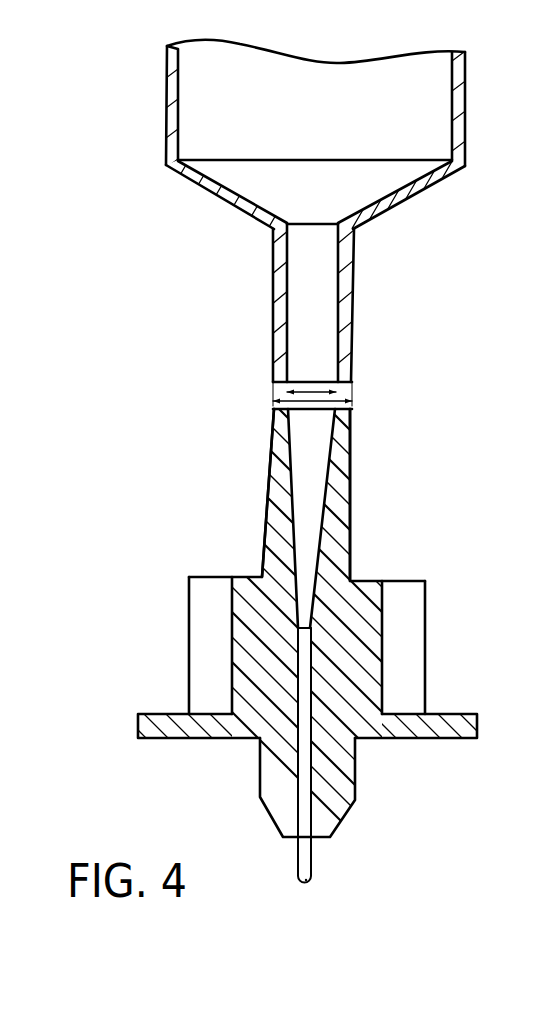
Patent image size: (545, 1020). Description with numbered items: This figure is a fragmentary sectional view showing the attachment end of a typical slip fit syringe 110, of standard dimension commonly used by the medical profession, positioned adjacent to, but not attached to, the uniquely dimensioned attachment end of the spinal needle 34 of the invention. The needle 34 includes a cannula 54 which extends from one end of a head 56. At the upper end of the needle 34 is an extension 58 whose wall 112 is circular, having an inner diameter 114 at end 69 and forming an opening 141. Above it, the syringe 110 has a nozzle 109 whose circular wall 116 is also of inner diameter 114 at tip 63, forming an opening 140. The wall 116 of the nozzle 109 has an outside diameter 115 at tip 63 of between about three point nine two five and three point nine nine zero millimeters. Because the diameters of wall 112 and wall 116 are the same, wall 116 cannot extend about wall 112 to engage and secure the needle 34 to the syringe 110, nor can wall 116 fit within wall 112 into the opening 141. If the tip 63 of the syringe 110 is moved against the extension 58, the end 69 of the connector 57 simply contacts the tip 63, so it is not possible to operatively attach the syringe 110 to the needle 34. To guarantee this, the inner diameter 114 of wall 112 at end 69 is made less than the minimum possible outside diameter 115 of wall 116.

The slip fit syringe 110 is at (422, 231).
The nozzle 109 is at (273, 288).
The opening 140 is at (307, 310).
The inner diameter 114 is at (317, 393).
The wall 116 is at (354, 292).
The tip 63 is at (354, 382).
The end 69 is at (278, 404).
The outside diameter 115 is at (336, 414).
The connector 57 is at (270, 447).
The wall 112 is at (340, 460).
The opening 141 is at (317, 433).
The extension 58 is at (352, 495).
The spinal needle 34 is at (382, 535).
The head 56 is at (426, 641).
The cannula 54 is at (312, 862).